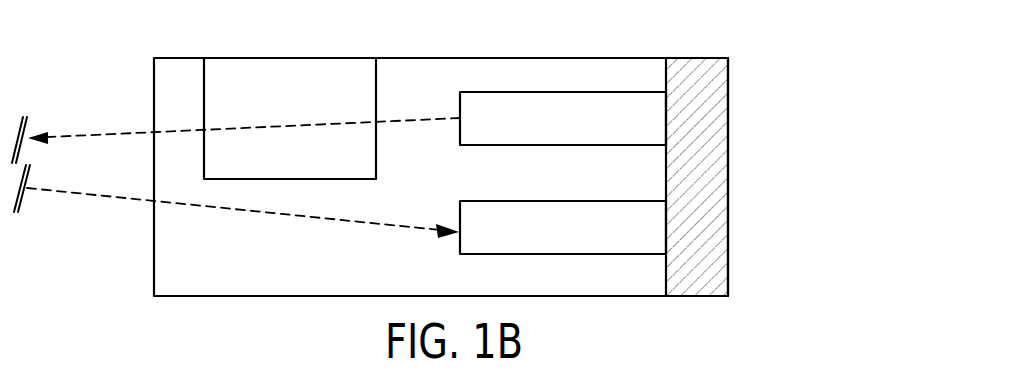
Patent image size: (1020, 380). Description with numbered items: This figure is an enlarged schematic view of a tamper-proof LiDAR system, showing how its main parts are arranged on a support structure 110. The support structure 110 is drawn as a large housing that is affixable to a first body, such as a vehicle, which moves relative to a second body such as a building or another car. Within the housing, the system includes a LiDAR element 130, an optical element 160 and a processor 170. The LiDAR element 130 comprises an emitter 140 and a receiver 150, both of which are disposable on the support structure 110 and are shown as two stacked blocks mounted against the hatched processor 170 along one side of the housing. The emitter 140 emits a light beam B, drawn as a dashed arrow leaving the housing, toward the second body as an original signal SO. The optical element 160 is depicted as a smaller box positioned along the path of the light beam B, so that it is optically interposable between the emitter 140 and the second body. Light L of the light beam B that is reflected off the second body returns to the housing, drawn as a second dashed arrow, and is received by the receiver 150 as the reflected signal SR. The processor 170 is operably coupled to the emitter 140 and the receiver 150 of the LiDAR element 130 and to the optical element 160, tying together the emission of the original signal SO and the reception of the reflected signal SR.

The support structure 110 is at (154, 253).
The LiDAR element 130 is at (728, 173).
The emitter 140 is at (634, 130).
The receiver 150 is at (650, 248).
The optical element 160 is at (212, 106).
The processor 170 is at (712, 68).
The light beam B is at (347, 121).
The original signal SO is at (253, 126).
The reflected signal SR is at (272, 215).
The light L is at (370, 227).